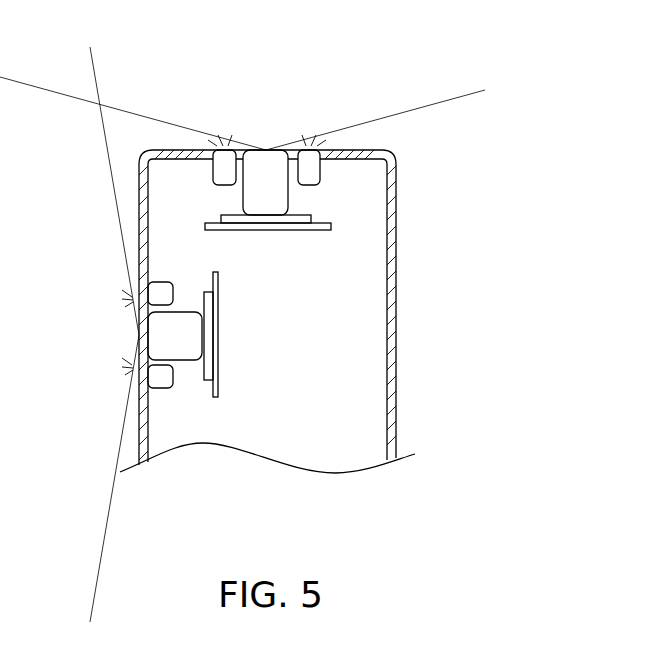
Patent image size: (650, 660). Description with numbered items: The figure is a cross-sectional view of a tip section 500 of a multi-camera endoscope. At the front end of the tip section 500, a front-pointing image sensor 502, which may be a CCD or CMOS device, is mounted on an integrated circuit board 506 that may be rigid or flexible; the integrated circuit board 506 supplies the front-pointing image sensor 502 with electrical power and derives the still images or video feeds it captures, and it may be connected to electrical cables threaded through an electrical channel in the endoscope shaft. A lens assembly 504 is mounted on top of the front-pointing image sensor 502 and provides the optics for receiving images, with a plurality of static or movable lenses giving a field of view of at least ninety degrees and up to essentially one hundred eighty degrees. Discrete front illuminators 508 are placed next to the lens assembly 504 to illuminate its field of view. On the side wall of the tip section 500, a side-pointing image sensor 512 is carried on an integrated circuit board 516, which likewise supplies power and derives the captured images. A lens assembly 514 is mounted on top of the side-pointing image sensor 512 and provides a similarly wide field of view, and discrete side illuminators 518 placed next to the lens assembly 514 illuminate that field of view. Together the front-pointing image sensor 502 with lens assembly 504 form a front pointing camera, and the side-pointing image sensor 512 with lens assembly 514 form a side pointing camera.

The tip section 500 is at (427, 265).
The front-pointing image sensor 502 is at (296, 218).
The lens assembly 504 is at (248, 193).
The integrated circuit board 506 is at (323, 230).
The discrete front illuminators 508 is at (308, 162).
The side-pointing image sensor 512 is at (207, 383).
The lens assembly 514 is at (172, 350).
The integrated circuit board 516 is at (218, 363).
The discrete side illuminators 518 is at (150, 292).